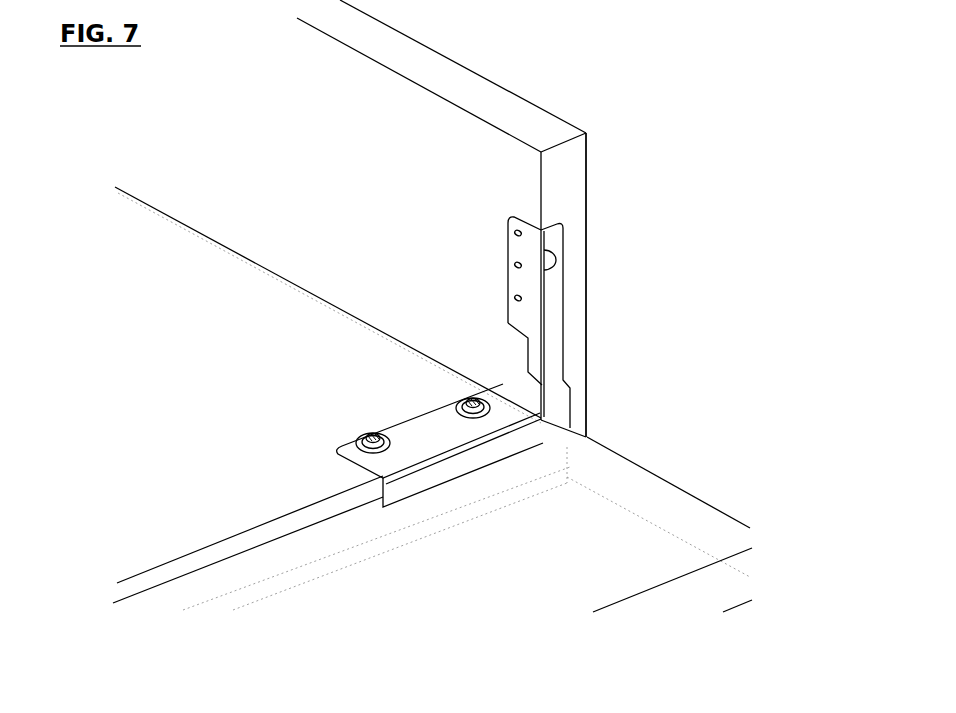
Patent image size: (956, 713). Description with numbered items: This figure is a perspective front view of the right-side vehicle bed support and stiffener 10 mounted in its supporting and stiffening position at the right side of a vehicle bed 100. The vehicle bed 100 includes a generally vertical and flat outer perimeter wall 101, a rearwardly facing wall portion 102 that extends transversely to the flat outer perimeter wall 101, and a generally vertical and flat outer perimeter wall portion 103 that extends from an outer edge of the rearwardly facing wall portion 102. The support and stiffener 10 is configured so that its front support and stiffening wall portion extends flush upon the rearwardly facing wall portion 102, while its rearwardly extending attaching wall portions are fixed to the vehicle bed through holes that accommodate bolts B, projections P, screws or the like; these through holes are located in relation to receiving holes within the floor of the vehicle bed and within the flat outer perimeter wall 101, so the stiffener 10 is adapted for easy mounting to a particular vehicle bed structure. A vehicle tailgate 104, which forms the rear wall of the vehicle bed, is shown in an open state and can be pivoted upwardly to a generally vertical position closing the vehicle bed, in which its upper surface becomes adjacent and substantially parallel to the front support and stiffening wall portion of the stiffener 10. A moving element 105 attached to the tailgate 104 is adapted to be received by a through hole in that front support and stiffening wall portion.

The vehicle bed 100 is at (335, 151).
The flat outer perimeter wall 101 is at (508, 155).
The rearwardly facing wall portion 102 is at (568, 170).
The outer perimeter wall portion 103 is at (587, 245).
The projection P is at (563, 258).
The right-side vehicle bed support and stiffener 10 is at (525, 257).
The moving element 105 is at (555, 425).
The vehicle tailgate 104 is at (658, 527).
The bolt B is at (353, 442).